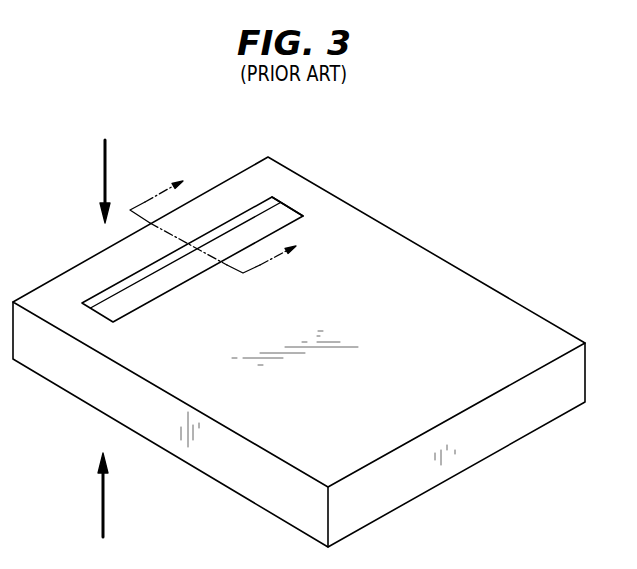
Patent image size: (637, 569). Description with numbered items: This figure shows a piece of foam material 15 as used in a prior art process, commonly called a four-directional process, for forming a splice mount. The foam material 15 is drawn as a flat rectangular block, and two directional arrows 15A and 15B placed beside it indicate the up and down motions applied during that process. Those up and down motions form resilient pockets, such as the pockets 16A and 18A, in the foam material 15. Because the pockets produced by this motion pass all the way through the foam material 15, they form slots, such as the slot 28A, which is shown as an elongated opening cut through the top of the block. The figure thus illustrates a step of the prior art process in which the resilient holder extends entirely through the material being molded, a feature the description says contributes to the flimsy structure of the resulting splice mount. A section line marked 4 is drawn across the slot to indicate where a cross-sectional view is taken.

The foam material 15 is at (427, 248).
The directional arrow 15A is at (104, 157).
The directional arrow 15B is at (102, 489).
The resilient pocket 16A is at (122, 308).
The resilient pocket 18A is at (268, 223).
The slot 28A is at (233, 248).
The section line 4- 4 is at (220, 219).